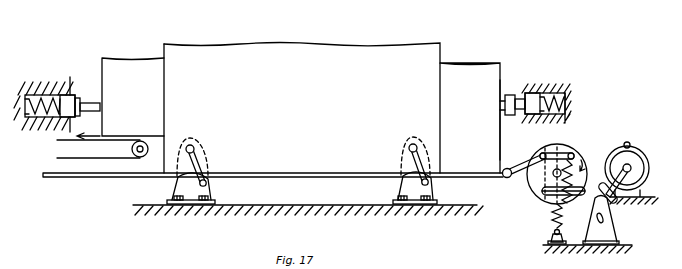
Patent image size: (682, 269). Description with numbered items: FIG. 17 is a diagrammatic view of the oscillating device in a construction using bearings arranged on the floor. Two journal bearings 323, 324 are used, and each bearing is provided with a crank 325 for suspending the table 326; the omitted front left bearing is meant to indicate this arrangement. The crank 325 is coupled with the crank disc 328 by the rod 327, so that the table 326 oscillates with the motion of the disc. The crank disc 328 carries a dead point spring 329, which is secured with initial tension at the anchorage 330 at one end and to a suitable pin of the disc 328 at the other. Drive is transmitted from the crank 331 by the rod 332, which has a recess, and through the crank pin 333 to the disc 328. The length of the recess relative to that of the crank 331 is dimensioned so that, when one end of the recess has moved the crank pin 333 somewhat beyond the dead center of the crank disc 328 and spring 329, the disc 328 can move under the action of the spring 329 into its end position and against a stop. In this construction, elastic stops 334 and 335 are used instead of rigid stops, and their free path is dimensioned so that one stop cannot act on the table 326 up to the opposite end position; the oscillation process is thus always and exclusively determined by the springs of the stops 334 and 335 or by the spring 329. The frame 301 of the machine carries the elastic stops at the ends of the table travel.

The machine frame 301 is at (501, 69).
The journal bearing 323 is at (209, 193).
The journal bearing 324 is at (398, 190).
The crank 325 is at (199, 167).
The table 326 is at (297, 178).
The rod 327 is at (523, 166).
The crank disc 328 is at (557, 145).
The dead point spring 329 is at (563, 207).
The support 330 is at (551, 236).
The crank 331 is at (616, 198).
The rod 332 is at (606, 187).
The crank pin 333 is at (545, 194).
The elastic stop 334 is at (38, 94).
The elastic stop 335 is at (553, 92).